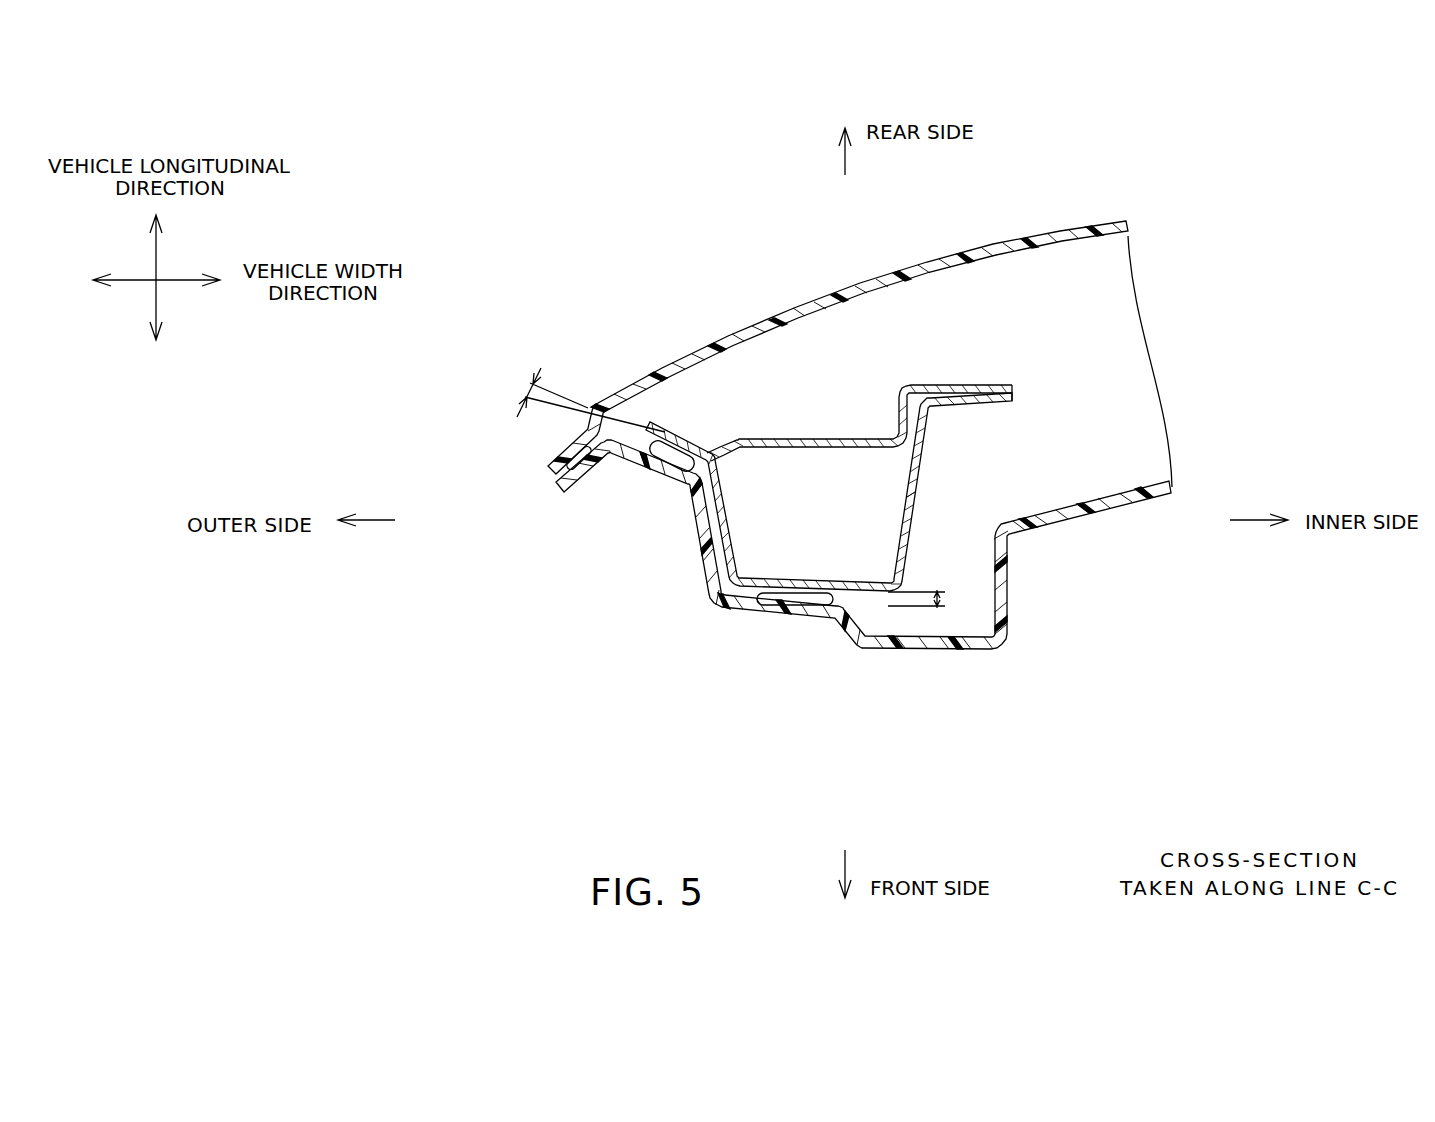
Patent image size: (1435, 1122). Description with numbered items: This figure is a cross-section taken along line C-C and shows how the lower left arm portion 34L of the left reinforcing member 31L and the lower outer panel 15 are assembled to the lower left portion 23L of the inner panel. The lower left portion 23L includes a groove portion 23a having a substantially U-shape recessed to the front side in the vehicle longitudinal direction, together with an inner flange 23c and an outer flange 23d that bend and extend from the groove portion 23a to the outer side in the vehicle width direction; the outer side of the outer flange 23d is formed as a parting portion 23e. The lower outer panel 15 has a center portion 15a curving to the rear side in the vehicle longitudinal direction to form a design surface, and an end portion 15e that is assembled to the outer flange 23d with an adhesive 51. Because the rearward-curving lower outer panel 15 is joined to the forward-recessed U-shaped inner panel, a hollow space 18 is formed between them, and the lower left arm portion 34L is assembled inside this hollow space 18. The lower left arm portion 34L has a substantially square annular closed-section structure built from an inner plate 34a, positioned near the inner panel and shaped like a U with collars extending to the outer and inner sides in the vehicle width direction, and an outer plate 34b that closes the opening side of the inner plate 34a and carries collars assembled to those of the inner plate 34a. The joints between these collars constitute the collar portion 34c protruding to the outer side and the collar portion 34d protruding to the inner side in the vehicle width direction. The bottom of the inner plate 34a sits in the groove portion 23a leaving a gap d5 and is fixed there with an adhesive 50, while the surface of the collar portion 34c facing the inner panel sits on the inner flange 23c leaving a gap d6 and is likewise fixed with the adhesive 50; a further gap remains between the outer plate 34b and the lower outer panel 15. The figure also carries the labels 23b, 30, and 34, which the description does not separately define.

The lower outer panel 15 is at (1017, 226).
The center portion 15a is at (824, 298).
The end portion 15e is at (551, 466).
The hollow space 18 is at (741, 391).
The groove portion 23a is at (793, 620).
The lower panel inner vertical wall 23b is at (1052, 532).
The inner flange 23c is at (652, 470).
The outer flange 23d is at (608, 484).
The parting portion 23e is at (566, 484).
The lower left portion 23L is at (1080, 531).
The body panel 30 is at (1044, 374).
The left reinforcing member 31L is at (1181, 354).
The bracket 34 is at (714, 553).
The inner plate 34a is at (908, 505).
The outer plate 34b is at (822, 436).
The collar portion 34c is at (666, 418).
The collar portion 34d is at (985, 386).
The lower left arm portion 34L is at (928, 467).
The adhesive 50 is at (677, 464).
The adhesive 51 is at (588, 472).
The gap d5 is at (942, 600).
The gap d6 is at (528, 383).